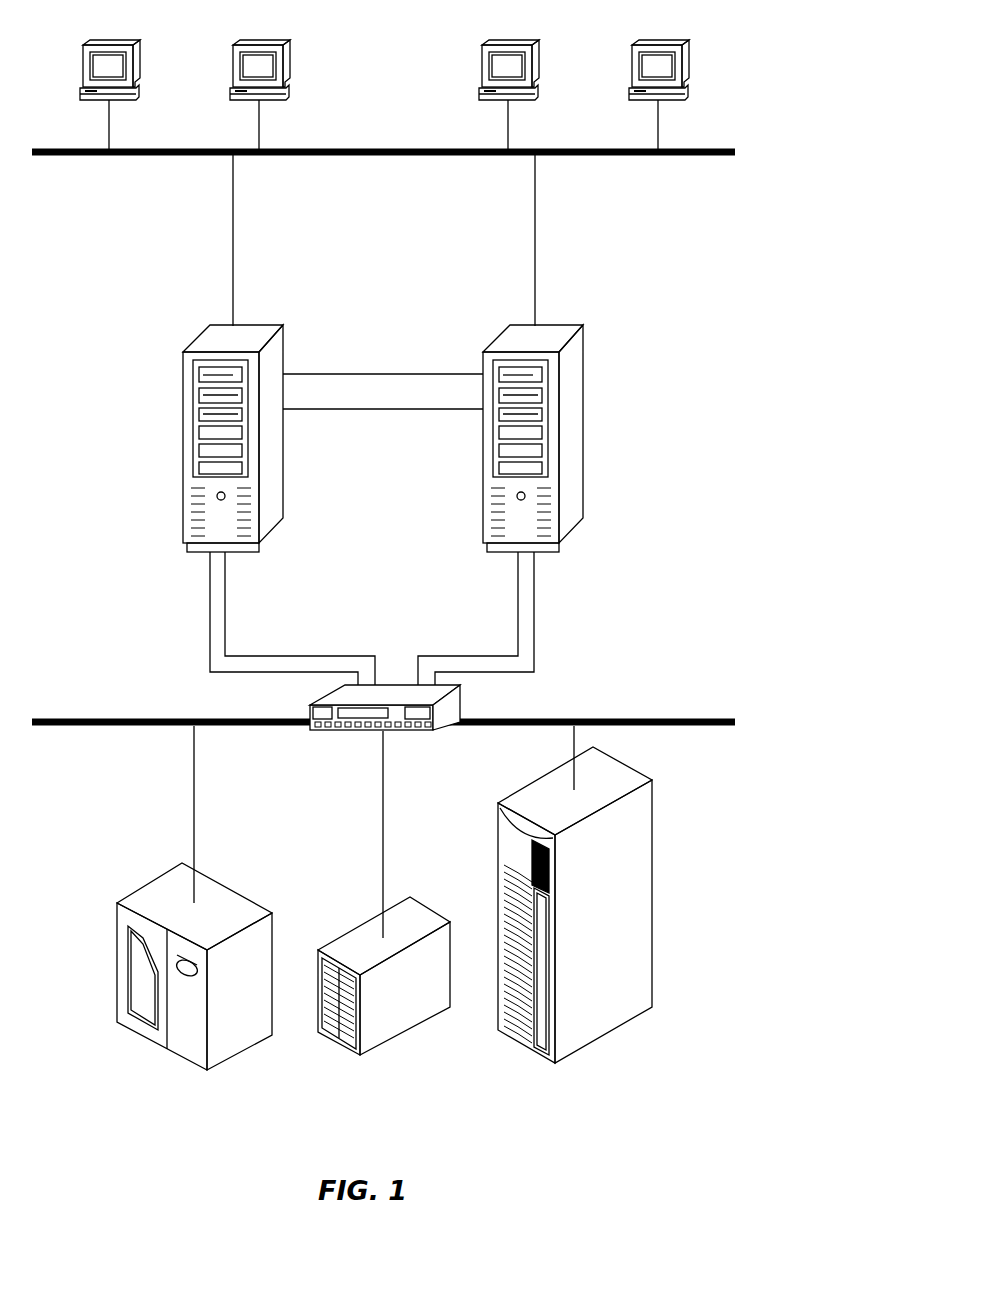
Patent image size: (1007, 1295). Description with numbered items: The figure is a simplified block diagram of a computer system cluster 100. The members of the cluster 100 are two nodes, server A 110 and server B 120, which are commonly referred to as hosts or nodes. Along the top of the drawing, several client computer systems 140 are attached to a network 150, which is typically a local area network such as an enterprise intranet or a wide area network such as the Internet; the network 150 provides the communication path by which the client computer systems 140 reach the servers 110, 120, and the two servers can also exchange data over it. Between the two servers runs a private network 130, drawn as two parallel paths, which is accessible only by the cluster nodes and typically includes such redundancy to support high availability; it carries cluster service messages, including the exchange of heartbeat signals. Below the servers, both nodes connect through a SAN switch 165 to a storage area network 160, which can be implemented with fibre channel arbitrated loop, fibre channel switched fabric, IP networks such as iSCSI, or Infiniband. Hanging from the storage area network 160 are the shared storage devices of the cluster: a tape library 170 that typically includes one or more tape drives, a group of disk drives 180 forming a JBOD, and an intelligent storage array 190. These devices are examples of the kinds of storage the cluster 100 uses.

The cluster 100 is at (670, 1101).
The server A 110 is at (183, 427).
The server B 120 is at (584, 420).
The private network 130 is at (366, 372).
The client computer systems 140 is at (660, 42).
The network 150 is at (605, 156).
The storage area network 160 is at (710, 728).
The SAN switch 165 is at (345, 732).
The tape library 170 is at (218, 905).
The group of disk drives 180 is at (405, 908).
The intelligent storage array 190 is at (653, 887).